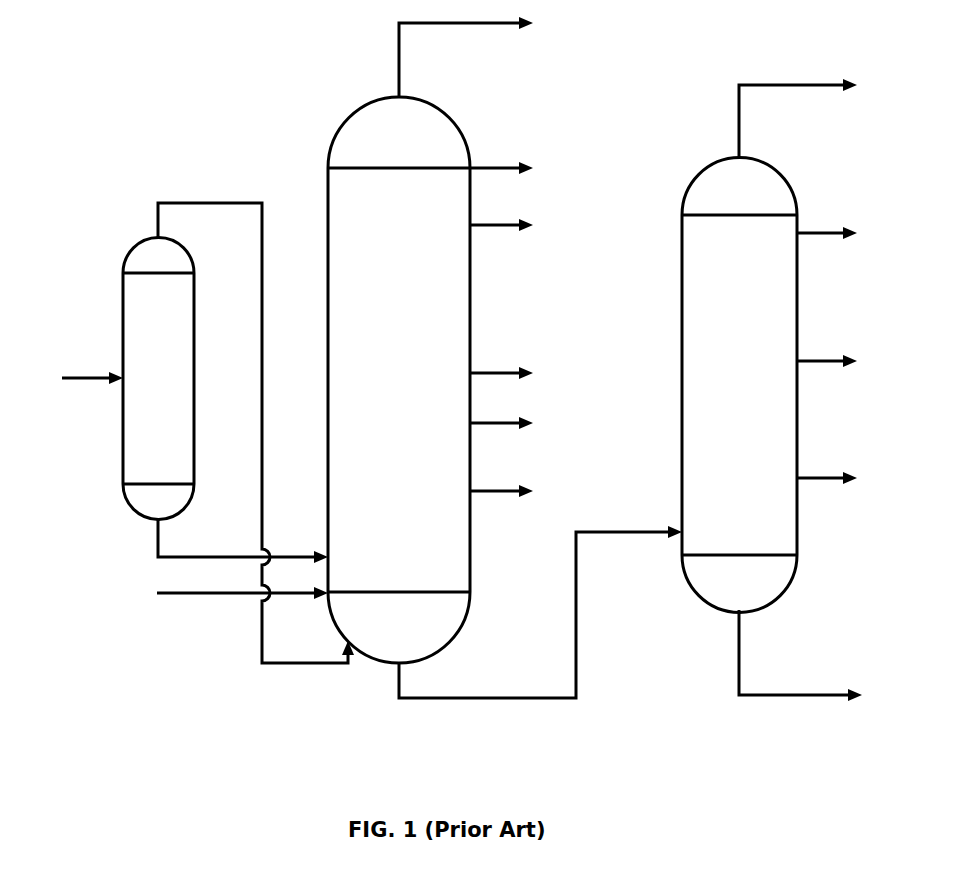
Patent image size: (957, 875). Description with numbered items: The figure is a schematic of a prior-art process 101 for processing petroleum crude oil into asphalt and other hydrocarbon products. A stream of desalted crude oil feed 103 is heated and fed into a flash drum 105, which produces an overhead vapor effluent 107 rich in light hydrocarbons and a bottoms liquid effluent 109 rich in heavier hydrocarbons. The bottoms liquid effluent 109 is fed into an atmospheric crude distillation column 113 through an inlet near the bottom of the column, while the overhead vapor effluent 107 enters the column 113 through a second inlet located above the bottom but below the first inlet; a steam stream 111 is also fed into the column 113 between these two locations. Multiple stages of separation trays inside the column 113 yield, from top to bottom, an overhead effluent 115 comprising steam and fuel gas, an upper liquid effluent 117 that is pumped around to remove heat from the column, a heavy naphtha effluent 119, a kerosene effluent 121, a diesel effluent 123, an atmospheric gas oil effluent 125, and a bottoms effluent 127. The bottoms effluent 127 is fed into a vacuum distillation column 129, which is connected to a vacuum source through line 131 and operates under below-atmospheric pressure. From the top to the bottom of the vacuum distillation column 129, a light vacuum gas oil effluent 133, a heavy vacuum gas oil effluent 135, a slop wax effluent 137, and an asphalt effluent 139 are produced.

The process 101 is at (176, 84).
The desalted crude oil feed 103 is at (92, 364).
The flash drum 105 is at (158, 379).
The overhead vapor effluent 107 is at (256, 421).
The bottoms liquid effluent 109 is at (243, 541).
The steam stream 111 is at (242, 584).
The atmospheric crude distillation column 113 is at (399, 380).
The overhead effluent 115 is at (466, 49).
The upper liquid effluent 117 is at (501, 159).
The heavy naphtha effluent 119 is at (501, 213).
The kerosene effluent 121 is at (501, 362).
The diesel effluent 123 is at (501, 411).
The atmospheric gas oil effluent 125 is at (501, 479).
The bottoms effluent 127 is at (540, 602).
The vacuum distillation column 129 is at (739, 384).
The line 131 is at (798, 109).
The light vacuum gas oil effluent 133 is at (827, 222).
The heavy vacuum gas oil effluent 135 is at (827, 350).
The slop wax effluent 137 is at (827, 466).
The asphalt effluent 139 is at (800, 655).